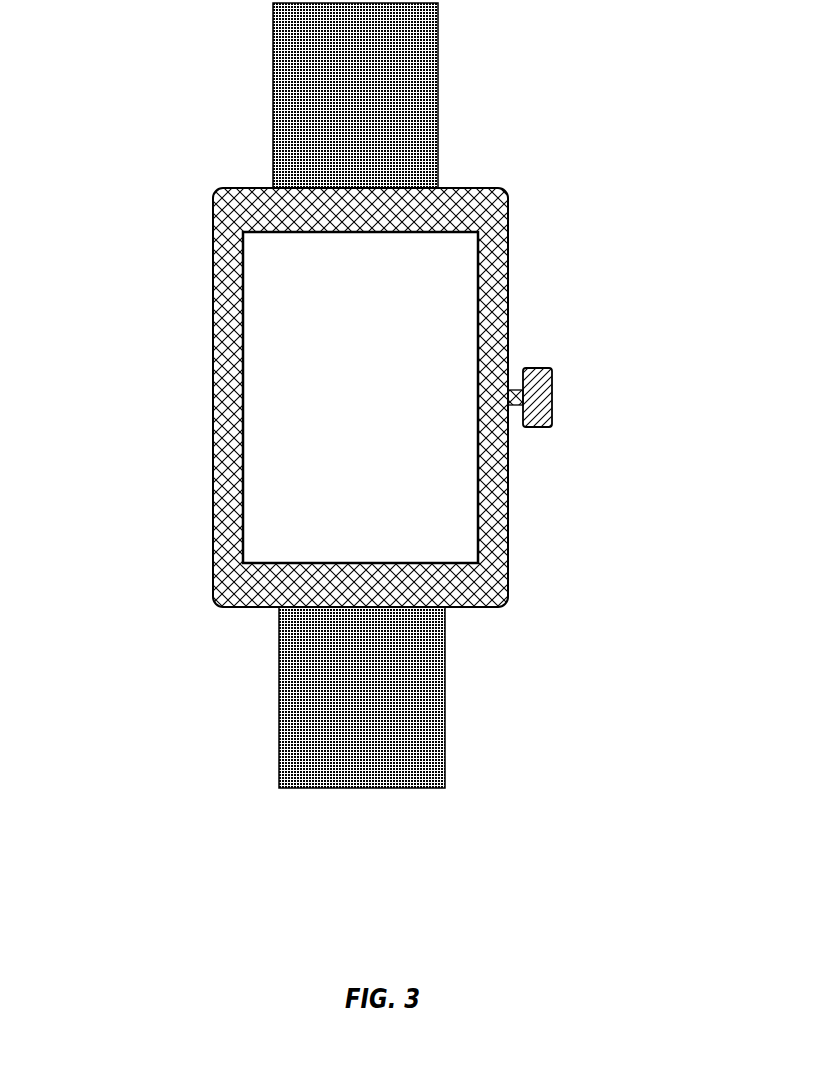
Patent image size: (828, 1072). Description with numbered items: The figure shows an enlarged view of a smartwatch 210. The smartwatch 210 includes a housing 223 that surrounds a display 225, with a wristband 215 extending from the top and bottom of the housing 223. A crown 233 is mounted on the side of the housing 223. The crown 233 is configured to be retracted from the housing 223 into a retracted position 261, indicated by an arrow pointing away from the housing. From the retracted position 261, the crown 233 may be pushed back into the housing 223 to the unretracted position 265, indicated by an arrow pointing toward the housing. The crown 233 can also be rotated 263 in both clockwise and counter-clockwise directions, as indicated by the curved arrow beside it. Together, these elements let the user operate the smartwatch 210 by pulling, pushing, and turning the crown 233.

The smartwatch 210 is at (524, 119).
The wristband 215 is at (298, 137).
The housing 223 is at (228, 405).
The display 225 is at (276, 337).
The crown 233 is at (540, 380).
The retracted position 261 is at (552, 336).
The rotation 263 is at (587, 377).
The unretracted position 265 is at (552, 454).